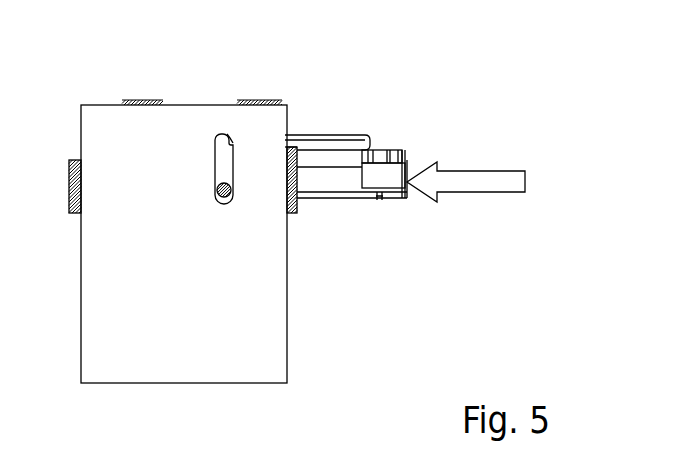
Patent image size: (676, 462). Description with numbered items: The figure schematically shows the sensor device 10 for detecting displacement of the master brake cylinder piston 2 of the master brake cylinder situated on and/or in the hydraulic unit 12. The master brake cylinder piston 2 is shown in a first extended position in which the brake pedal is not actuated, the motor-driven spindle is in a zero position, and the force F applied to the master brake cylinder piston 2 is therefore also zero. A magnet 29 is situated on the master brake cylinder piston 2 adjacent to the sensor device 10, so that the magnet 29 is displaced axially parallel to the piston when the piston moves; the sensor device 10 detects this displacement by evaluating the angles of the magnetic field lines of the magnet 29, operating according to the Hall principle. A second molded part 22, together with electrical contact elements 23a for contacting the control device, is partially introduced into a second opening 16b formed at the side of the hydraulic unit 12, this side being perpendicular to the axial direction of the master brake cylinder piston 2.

The hydraulic unit 12 is at (275, 365).
The second molded part 22 is at (222, 153).
The electrical contact elements 23a is at (214, 184).
The second opening 16b is at (229, 143).
The sensor device 10 is at (335, 135).
The master brake cylinder piston 2 is at (335, 184).
The magnet 29 is at (395, 152).
The force F is at (490, 178).